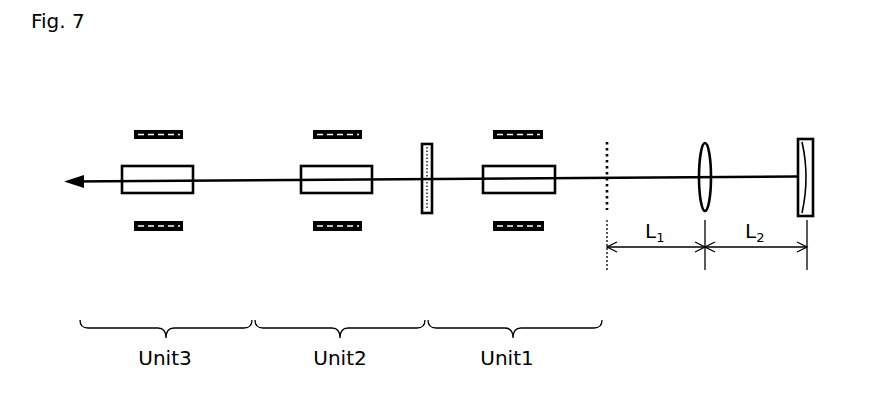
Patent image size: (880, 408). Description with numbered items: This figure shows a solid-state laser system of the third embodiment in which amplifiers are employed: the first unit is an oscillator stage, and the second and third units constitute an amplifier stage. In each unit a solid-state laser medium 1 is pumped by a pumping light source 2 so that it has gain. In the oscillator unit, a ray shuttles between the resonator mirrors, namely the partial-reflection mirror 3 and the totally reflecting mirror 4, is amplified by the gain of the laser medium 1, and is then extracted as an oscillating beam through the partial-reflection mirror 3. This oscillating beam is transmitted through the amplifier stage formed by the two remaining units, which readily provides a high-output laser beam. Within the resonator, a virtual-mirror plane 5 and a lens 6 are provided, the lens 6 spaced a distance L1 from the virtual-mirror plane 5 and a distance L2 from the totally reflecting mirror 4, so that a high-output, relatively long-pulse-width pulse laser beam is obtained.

The solid-state laser medium 1 is at (188, 160).
The pumping light source 2 is at (150, 128).
The partial-reflection mirror 3 is at (425, 140).
The totally reflecting mirror 4 is at (805, 135).
The virtual-mirror plane 5 is at (607, 135).
The lens 6 is at (705, 138).